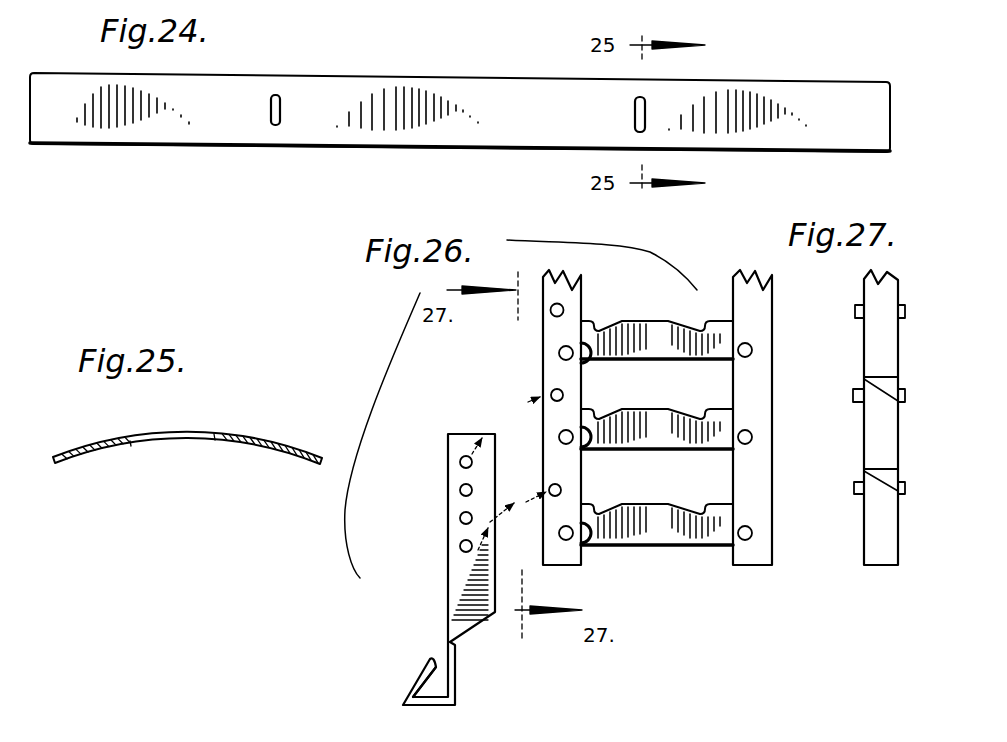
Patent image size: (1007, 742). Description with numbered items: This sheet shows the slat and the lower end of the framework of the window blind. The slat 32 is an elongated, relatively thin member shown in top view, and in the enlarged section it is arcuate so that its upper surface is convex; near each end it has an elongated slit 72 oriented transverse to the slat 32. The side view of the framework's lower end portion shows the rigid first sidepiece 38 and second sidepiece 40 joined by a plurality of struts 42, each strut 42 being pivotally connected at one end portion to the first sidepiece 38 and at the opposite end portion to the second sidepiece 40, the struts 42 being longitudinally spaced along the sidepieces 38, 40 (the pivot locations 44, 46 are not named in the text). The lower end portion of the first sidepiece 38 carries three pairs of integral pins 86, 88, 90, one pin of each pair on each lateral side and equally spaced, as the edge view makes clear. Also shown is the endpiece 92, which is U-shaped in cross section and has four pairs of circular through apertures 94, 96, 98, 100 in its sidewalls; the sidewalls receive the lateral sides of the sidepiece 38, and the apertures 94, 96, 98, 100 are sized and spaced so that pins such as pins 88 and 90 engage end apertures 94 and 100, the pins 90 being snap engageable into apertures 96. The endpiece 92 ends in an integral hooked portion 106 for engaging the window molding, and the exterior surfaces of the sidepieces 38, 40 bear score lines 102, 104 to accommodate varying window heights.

In FIG. 24, the slat 32 is at (50, 121).
In FIG. 25, the slat 32 is at (92, 445).
In FIG. 24, the elongated slit 72 is at (280, 105).
In FIG. 25, the elongated slit 72 is at (212, 436).
In FIG. 26, the first sidepiece 38 is at (562, 286).
In FIG. 27, the first sidepiece 38 is at (877, 530).
In FIG. 26, the second sidepiece 40 is at (751, 432).
In FIG. 26, the strut 42 is at (616, 440).
In FIG. 26, the hole 44 is at (563, 541).
In FIG. 26, the hole 46 is at (745, 542).
In FIG. 26, the integral pin 86 is at (563, 308).
In FIG. 27, the integral pin 86 is at (855, 312).
In FIG. 26, the integral pin 88 is at (563, 396).
In FIG. 27, the integral pin 88 is at (855, 395).
In FIG. 26, the integral pin 90 is at (550, 498).
In FIG. 27, the integral pin 90 is at (855, 487).
In FIG. 26, the endpiece 92 is at (472, 588).
In FIG. 26, the through aperture 94 is at (460, 463).
In FIG. 26, the through aperture 96 is at (460, 491).
In FIG. 26, the through aperture 98 is at (460, 519).
In FIG. 26, the through aperture 100 is at (460, 547).
In FIG. 27, the score line 102 is at (872, 468).
In FIG. 27, the score line 104 is at (870, 375).
In FIG. 26, the hooked portion 106 is at (428, 706).